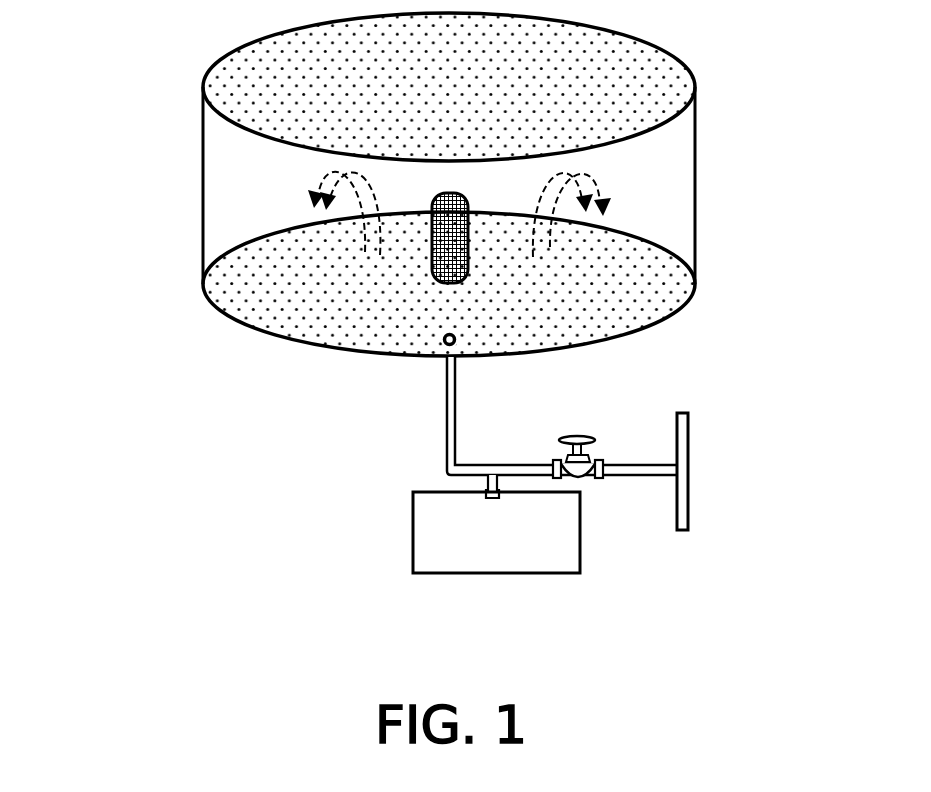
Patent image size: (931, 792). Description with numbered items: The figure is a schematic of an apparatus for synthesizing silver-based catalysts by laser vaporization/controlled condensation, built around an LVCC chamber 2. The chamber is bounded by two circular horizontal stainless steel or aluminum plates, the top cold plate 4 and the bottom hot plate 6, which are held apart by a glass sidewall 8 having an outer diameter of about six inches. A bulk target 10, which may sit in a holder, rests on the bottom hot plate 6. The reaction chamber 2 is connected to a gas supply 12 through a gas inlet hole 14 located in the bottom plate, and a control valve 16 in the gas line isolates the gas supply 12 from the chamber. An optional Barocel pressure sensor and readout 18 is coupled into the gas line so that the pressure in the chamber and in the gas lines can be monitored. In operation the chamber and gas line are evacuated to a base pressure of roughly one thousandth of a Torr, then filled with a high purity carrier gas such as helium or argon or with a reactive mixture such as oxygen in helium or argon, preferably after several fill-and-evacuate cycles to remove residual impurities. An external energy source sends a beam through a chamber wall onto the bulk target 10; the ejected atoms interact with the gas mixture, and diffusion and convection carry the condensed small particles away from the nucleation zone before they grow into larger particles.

The LVCC chamber 2 is at (102, 62).
The top cold plate 4 is at (663, 70).
The bottom hot plate 6 is at (668, 302).
The glass sidewall 8 is at (203, 175).
The bulk target 10 is at (410, 263).
The gas supply 12 is at (688, 507).
The gas inlet hole 14 is at (490, 342).
The control valve 16 is at (590, 477).
The Barocel pressure sensor and readout 18 is at (498, 575).